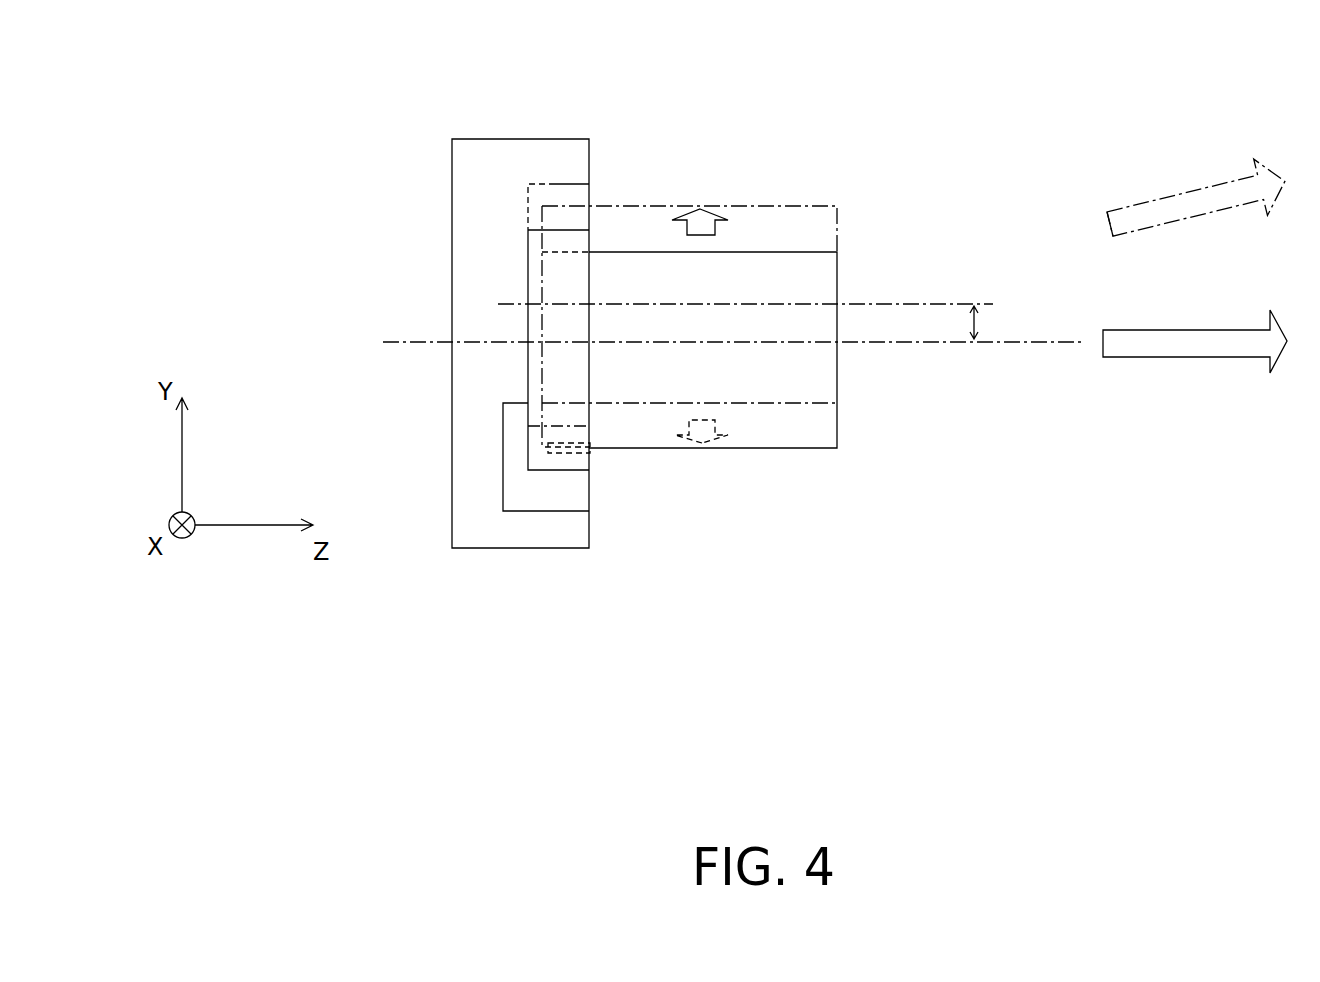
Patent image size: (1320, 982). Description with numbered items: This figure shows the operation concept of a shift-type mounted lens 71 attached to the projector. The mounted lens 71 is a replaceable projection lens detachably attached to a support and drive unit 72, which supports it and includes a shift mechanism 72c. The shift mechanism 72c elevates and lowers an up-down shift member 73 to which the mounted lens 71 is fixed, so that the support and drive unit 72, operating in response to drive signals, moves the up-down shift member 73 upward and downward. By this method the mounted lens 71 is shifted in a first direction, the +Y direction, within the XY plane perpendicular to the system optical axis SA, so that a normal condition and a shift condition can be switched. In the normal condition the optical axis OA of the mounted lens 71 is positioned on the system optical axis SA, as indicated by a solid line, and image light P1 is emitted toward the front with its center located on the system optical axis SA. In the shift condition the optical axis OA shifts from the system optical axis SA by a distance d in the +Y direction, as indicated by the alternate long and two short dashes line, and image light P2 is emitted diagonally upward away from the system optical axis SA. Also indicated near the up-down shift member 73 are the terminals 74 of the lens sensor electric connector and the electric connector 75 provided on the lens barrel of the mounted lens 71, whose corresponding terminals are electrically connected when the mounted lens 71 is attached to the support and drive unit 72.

The mounted lens 71 is at (760, 206).
The support and drive unit 72 is at (508, 549).
The shift mechanism 72c is at (573, 512).
The up-down shift member 73 is at (555, 184).
The terminals of the lens sensor electric connector 74 is at (603, 452).
The electric connector 75 is at (593, 450).
The optical axis OA is at (905, 300).
The system optical axis SA is at (922, 341).
The distance d is at (978, 322).
The image light P1 is at (1202, 357).
The image light P2 is at (1190, 188).